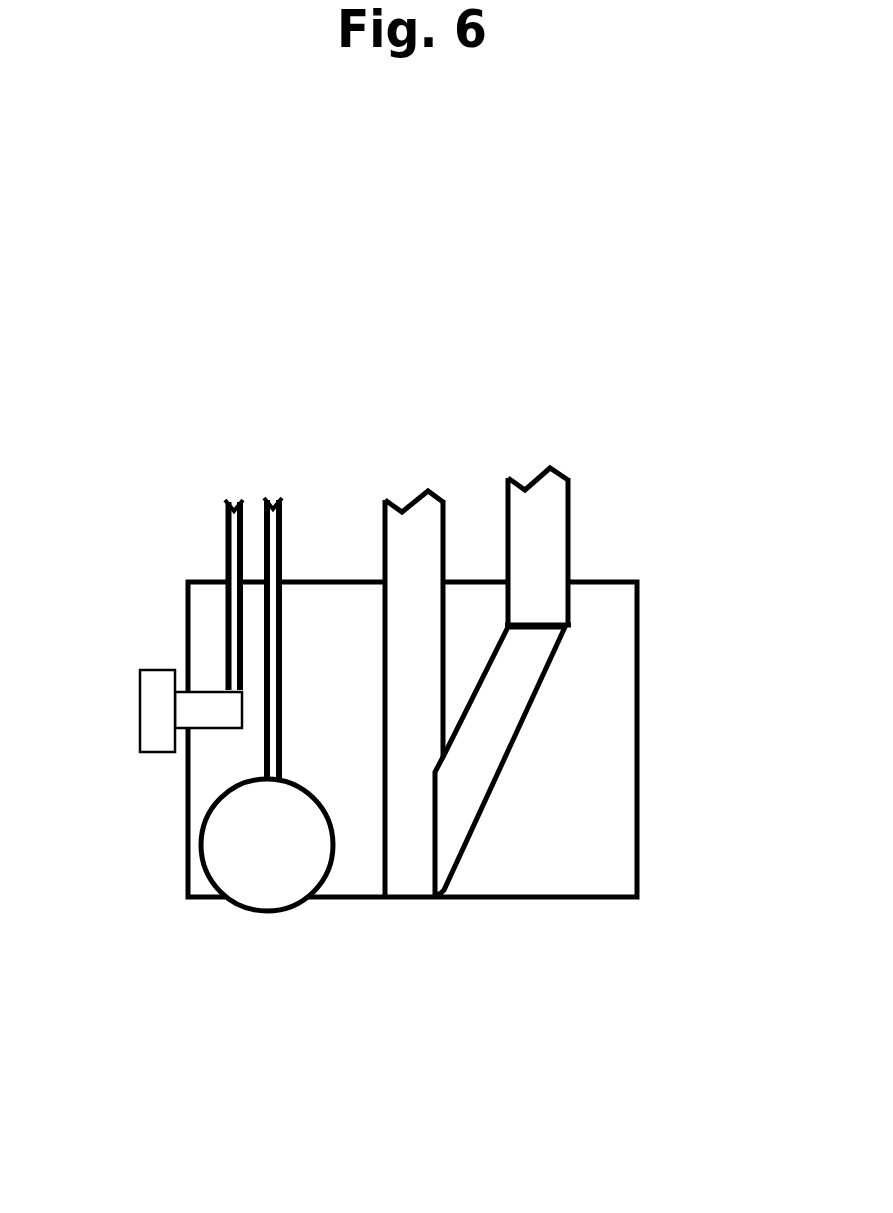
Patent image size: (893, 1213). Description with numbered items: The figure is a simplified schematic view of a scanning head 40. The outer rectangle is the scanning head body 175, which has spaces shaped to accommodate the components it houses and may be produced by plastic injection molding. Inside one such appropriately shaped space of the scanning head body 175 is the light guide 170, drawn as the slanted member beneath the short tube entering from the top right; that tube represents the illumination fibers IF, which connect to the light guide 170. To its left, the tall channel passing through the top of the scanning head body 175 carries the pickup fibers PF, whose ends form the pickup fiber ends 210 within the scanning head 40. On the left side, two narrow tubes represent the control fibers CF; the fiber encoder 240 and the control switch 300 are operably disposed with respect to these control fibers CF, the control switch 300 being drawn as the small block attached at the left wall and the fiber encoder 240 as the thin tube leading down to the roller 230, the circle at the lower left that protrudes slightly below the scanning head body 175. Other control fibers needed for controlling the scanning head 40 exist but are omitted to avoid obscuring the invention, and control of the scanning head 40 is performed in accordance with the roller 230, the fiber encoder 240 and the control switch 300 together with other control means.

The scanning head 40 is at (421, 730).
The scanning head body 175 is at (640, 727).
The light guide 170 is at (513, 748).
The pickup fiber ends 210 is at (384, 763).
The fiber encoder 240 is at (282, 607).
The roller 230 is at (267, 913).
The control switch 300 is at (155, 668).
The control fibers CF is at (276, 500).
The pickup fibers PF is at (427, 490).
The illumination fibers IF is at (549, 466).